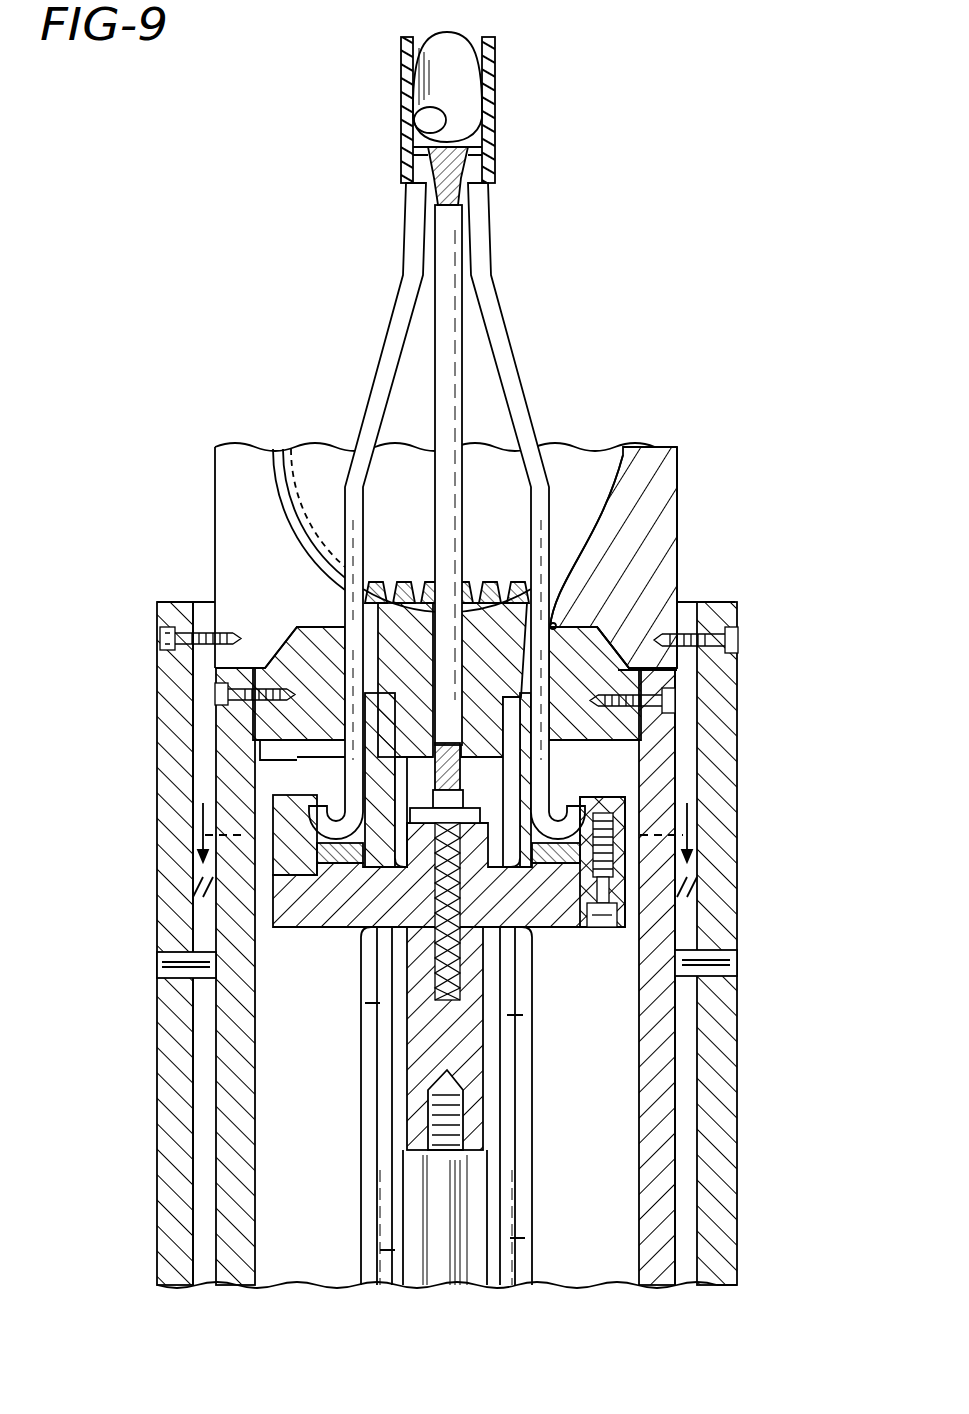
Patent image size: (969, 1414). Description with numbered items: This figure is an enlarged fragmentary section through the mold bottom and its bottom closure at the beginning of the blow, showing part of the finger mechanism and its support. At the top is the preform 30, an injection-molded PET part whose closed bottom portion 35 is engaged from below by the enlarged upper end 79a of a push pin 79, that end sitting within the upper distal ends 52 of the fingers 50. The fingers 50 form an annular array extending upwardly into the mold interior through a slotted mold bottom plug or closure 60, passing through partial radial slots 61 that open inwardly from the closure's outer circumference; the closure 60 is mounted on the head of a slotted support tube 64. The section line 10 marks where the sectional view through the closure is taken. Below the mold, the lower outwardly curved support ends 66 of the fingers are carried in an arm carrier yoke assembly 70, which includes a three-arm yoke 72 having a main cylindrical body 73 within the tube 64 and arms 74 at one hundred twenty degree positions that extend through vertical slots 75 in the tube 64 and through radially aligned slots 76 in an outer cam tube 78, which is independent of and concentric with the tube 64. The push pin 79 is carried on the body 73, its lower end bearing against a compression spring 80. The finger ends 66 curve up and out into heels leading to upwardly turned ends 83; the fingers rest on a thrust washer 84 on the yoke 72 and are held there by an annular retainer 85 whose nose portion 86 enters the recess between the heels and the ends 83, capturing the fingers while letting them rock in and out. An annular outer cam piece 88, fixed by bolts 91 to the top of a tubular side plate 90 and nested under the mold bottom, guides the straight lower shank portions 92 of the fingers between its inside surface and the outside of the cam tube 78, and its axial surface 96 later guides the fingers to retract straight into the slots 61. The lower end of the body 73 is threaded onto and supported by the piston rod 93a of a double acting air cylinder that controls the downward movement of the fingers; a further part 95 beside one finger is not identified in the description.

The container body 10 is at (180, 588).
The preform 30 is at (500, 78).
The closed bottom portion 35 is at (413, 108).
The articulated fingers 50 is at (383, 333).
The upper distal ends 52 is at (498, 172).
The bottom closure 60 is at (483, 603).
The partial radial slots 61 is at (370, 603).
The slotted support tube 64 is at (515, 1058).
The lower support ends 66 is at (313, 797).
The arm carrier yoke assembly 70 is at (357, 940).
The three-arm yoke 72 is at (275, 895).
The main cylindrical body 73 is at (410, 1053).
The yoke arms 74 is at (335, 928).
The vertical slots 75 is at (385, 1165).
The radially aligned slots 76 is at (360, 1215).
The outer cam tube 78 is at (385, 1250).
The push pin 79 is at (443, 386).
The enlarged upper end 79a is at (462, 150).
The compression spring 80 is at (470, 955).
The upwardly-turned ends 83 is at (575, 812).
The thrust washer 84 is at (537, 865).
The annular retainer 85 is at (622, 797).
The nose portion 86 is at (556, 822).
The outer cam piece 88 is at (695, 660).
The tubular side plate 90 is at (665, 1005).
The bolts 91 is at (160, 637).
The straight lower shank portions 92 is at (295, 752).
The piston rod 93a is at (448, 1273).
The collar 95 is at (346, 664).
The axial surface 96 is at (553, 626).